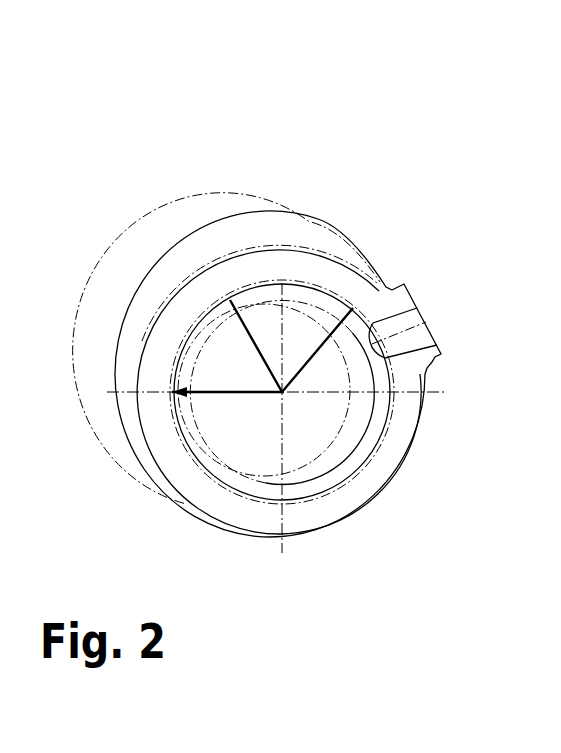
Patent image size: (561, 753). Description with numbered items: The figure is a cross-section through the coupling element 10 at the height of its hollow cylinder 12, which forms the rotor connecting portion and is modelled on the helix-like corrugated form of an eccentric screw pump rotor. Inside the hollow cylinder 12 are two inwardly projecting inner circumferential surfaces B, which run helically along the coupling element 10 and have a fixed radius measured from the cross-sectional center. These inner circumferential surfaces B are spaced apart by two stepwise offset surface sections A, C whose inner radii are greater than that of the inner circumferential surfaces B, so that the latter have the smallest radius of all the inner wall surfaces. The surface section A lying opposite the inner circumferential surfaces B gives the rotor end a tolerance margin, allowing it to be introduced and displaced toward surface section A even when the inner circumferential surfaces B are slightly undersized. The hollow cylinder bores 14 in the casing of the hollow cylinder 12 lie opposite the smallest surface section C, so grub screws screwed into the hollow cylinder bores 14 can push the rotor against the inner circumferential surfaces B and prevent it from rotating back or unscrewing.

The coupling element 10 is at (168, 197).
The hollow cylinder 12 is at (345, 502).
The hollow cylinder bores 14 is at (412, 331).
The surface section A is at (317, 287).
The inner circumferential surfaces B is at (190, 342).
The surface section C is at (175, 414).